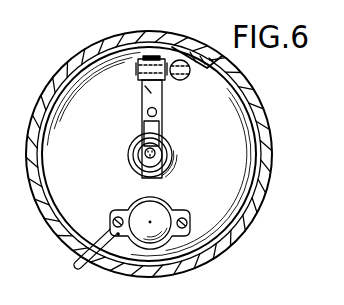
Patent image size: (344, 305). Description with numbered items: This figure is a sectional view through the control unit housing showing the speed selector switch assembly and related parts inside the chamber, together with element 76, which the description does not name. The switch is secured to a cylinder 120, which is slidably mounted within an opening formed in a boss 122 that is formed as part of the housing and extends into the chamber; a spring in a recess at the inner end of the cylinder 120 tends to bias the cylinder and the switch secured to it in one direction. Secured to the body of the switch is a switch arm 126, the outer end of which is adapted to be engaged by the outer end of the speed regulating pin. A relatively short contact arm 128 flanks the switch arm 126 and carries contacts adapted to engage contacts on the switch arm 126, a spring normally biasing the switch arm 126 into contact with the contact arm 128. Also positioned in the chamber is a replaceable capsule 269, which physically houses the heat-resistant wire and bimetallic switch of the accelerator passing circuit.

The hub 76 is at (129, 146).
The cylinder 120 is at (178, 81).
The boss 122 is at (202, 78).
The switch arm 126 is at (143, 175).
The contact arm 128 is at (143, 97).
The capsule 269 is at (155, 213).